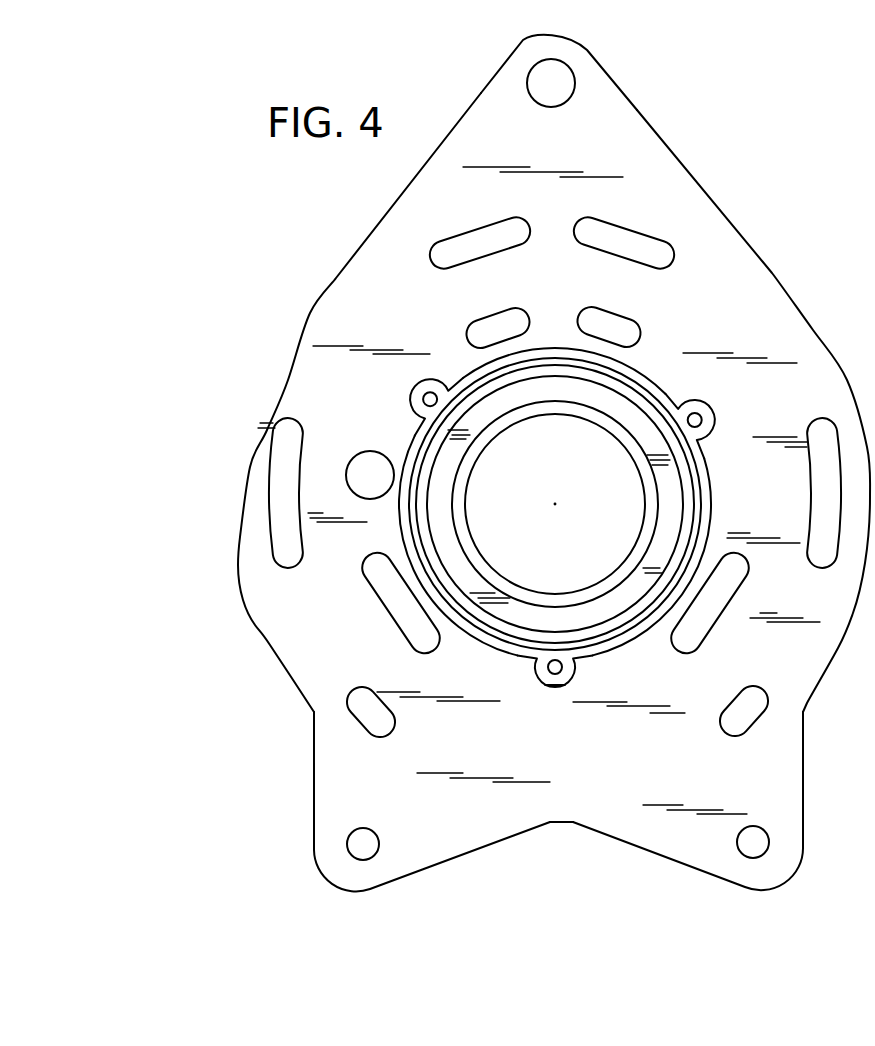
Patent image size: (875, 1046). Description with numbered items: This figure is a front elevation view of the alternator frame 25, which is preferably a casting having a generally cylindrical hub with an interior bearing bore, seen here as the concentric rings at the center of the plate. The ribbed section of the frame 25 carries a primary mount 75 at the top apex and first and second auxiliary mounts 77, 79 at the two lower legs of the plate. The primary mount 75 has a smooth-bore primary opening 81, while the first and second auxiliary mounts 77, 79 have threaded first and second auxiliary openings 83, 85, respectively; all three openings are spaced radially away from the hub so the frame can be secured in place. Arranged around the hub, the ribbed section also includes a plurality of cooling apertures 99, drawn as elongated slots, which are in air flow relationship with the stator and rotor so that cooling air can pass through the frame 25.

The frame 25 is at (373, 227).
The primary mount 75 is at (595, 44).
The smooth-bore primary opening 81 is at (562, 88).
The cooling apertures 99 is at (640, 323).
The second auxiliary mount 79 is at (310, 850).
The first auxiliary mount 77 is at (803, 848).
The second auxiliary opening 85 is at (365, 850).
The first auxiliary opening 83 is at (745, 845).